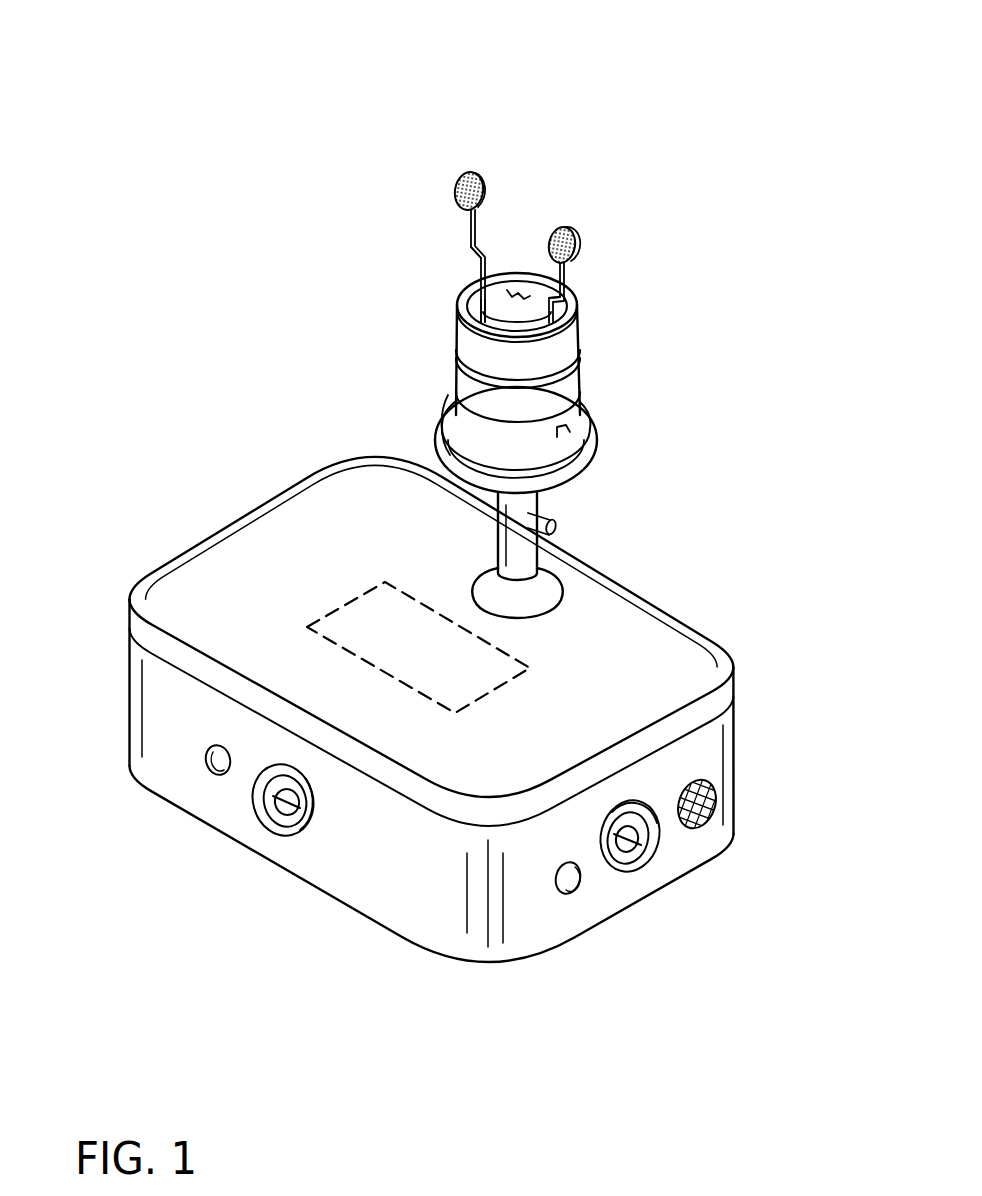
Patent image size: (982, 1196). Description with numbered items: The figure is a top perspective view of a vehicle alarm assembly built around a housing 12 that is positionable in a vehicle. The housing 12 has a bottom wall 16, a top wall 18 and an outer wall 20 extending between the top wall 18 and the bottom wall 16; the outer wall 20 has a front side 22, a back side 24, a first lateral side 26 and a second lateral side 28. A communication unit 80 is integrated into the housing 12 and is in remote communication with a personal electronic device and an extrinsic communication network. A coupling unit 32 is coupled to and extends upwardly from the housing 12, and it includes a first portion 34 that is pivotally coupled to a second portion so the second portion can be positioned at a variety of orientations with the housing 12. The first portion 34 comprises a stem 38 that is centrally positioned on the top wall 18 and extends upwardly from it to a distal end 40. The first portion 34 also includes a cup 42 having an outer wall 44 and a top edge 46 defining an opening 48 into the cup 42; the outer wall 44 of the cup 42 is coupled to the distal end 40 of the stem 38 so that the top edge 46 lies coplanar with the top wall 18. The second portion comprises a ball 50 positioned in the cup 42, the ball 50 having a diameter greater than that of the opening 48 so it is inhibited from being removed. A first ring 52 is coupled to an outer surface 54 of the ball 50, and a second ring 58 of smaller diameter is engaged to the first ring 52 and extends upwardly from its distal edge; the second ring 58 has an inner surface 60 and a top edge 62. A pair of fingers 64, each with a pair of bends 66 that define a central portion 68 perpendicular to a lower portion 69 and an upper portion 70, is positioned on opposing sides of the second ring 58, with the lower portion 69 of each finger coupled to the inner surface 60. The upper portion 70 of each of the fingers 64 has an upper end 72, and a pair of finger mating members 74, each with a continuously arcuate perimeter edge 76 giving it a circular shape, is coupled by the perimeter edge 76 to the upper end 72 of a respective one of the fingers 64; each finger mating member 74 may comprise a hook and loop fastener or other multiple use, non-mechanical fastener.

The housing 12 is at (182, 550).
The bottom wall 16 is at (580, 913).
The top wall 18 is at (340, 498).
The outer wall 20 is at (392, 900).
The front side 22 is at (318, 855).
The back side 24 is at (760, 660).
The first lateral side 26 is at (128, 712).
The second lateral side 28 is at (677, 855).
The coupling unit 32 is at (614, 312).
The first portion 34 is at (601, 517).
The stem 38 is at (513, 543).
The distal end 40 is at (497, 447).
The cup 42 is at (582, 463).
The outer wall 44 is at (538, 482).
The top edge 46 is at (588, 437).
The opening 48 is at (508, 410).
The ball 50 is at (535, 437).
The first ring 52 is at (582, 363).
The outer surface 54 is at (590, 443).
The second ring 58 is at (577, 303).
The inner surface 60 is at (517, 290).
The top edge 62 is at (546, 262).
The fingers 64 is at (465, 212).
The bends 66 is at (522, 283).
The central portion 68 is at (467, 262).
The lower portion 69 is at (470, 285).
The upper portion 70 is at (468, 232).
The upper end 72 is at (477, 176).
The finger mating members 74 is at (457, 180).
The perimeter edge 76 is at (573, 227).
The communication unit 80 is at (343, 603).